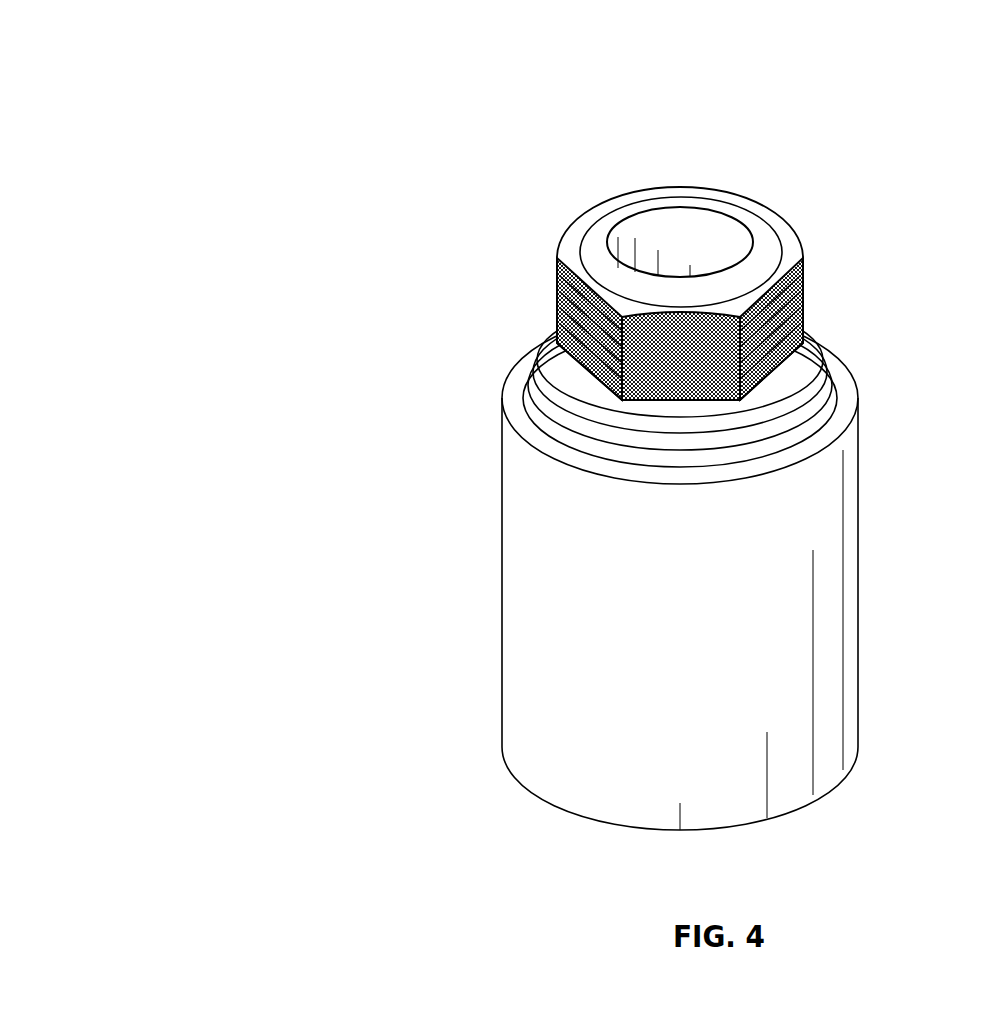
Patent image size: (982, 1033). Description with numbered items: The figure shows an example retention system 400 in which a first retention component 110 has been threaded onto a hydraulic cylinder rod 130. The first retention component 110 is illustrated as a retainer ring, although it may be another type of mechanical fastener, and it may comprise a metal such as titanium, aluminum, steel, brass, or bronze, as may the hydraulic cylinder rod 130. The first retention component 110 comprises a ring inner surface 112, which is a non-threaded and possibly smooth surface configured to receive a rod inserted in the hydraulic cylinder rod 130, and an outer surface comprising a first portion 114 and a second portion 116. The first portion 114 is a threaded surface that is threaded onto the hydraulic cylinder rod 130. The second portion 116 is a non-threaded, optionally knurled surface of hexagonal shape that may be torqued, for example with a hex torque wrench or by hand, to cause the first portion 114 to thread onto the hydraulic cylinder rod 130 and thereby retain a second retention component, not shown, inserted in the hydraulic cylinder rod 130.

The retention system 400 is at (237, 55).
The first retention component 110 is at (545, 278).
The ring inner surface 112 is at (692, 237).
The first portion 114 is at (805, 385).
The second portion 116 is at (805, 305).
The hydraulic cylinder rod 130 is at (498, 722).